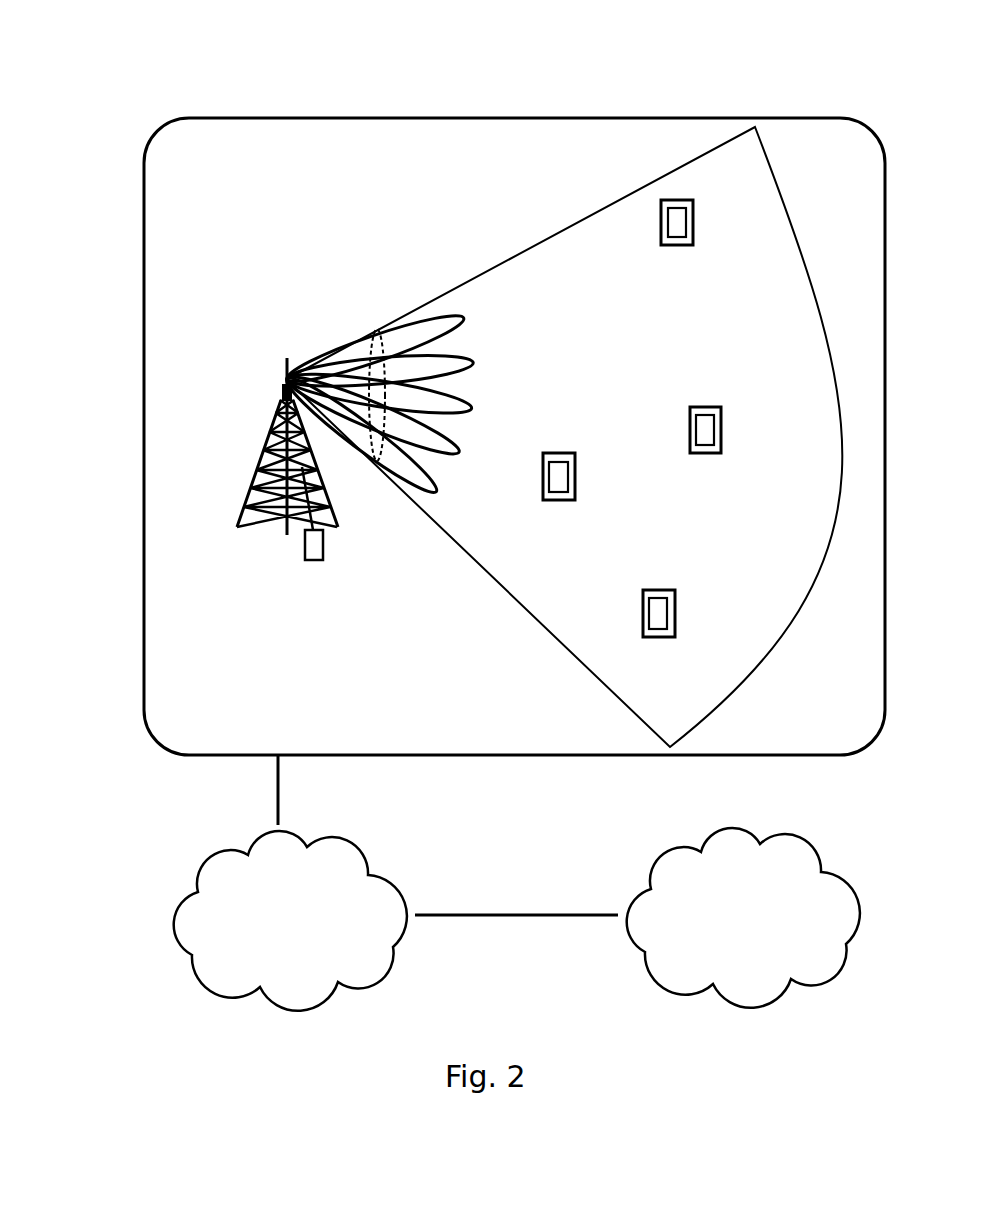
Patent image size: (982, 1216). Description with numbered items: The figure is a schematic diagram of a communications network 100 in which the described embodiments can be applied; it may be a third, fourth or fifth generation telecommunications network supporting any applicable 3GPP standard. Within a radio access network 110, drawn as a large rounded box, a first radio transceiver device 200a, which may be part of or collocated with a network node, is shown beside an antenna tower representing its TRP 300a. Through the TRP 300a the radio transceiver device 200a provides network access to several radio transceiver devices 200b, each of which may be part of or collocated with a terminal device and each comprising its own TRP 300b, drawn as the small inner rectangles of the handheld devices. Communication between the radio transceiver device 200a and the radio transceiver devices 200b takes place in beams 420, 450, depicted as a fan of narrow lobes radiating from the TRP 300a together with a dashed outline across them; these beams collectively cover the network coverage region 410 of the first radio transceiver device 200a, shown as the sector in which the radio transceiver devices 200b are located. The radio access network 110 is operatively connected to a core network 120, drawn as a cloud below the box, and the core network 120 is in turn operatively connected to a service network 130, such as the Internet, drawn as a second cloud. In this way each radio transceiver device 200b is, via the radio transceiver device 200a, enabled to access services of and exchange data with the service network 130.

The communications network 100 is at (226, 53).
The radio access network 110 is at (143, 580).
The core network 120 is at (321, 937).
The service network 130 is at (773, 934).
The radio transceiver device 200a is at (304, 554).
The radio transceiver devices 200b is at (680, 246).
The TRP 300a is at (285, 379).
The TRP 300b is at (727, 220).
The network coverage region 410 is at (490, 262).
The beam 420 is at (374, 330).
The beam 450 is at (376, 384).